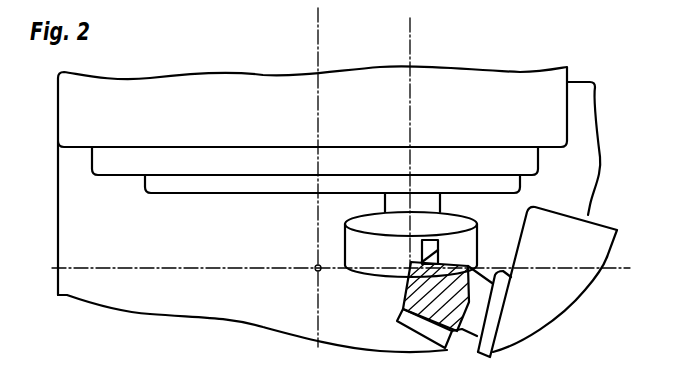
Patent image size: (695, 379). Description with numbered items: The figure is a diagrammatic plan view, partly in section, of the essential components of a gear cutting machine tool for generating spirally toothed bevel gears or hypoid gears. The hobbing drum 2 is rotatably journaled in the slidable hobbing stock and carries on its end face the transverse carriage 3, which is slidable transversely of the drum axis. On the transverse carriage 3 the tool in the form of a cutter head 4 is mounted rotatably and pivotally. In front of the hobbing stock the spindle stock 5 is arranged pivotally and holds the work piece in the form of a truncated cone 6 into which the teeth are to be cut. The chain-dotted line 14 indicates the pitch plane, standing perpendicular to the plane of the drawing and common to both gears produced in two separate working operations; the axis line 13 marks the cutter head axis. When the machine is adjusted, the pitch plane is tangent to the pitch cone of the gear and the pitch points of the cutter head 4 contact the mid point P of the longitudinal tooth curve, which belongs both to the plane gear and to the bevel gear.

The hobbing drum 2 is at (107, 172).
The transverse carriage 3 is at (173, 183).
The cutter head 4 is at (362, 253).
The spindle stock 5 is at (540, 232).
The truncated cone 6 is at (471, 287).
The wheel axis 13 is at (413, 102).
The pitch plane 14 is at (188, 268).
The mid point of the longitudinal tooth curve P is at (407, 297).